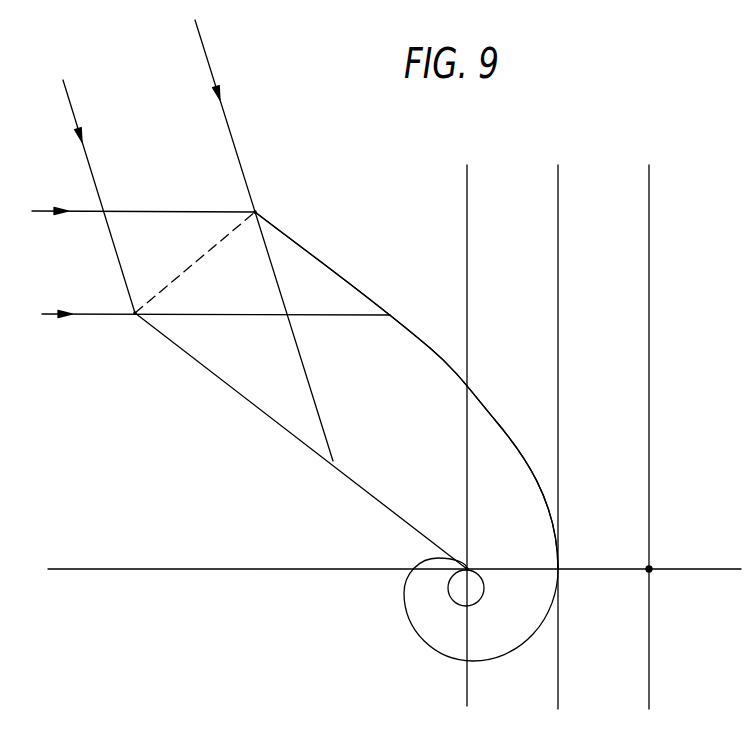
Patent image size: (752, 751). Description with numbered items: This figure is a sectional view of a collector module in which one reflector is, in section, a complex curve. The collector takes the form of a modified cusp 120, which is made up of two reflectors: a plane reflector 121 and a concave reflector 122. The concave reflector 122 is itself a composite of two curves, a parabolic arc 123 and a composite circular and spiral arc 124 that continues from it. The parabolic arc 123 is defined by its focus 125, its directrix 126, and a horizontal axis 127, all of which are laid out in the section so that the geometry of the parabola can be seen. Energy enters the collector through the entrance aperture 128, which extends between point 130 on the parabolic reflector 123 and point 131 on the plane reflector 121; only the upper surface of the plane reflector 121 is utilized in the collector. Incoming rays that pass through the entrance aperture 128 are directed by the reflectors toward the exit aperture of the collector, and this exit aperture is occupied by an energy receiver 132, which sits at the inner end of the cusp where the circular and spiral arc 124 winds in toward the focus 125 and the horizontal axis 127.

The modified cusp 120 is at (380, 226).
The plane reflector 121 is at (260, 412).
The concave reflector 122 is at (409, 321).
The parabolic arc 123 is at (483, 399).
The composite circular and spiral arc 124 is at (519, 647).
The focus 125 is at (470, 566).
The directrix 126 is at (650, 426).
The horizontal axis 127 is at (207, 568).
The entrance aperture 128 is at (197, 260).
The point on reflector 130 is at (256, 211).
The point on plane reflector 131 is at (134, 316).
The energy receiver 132 is at (477, 589).